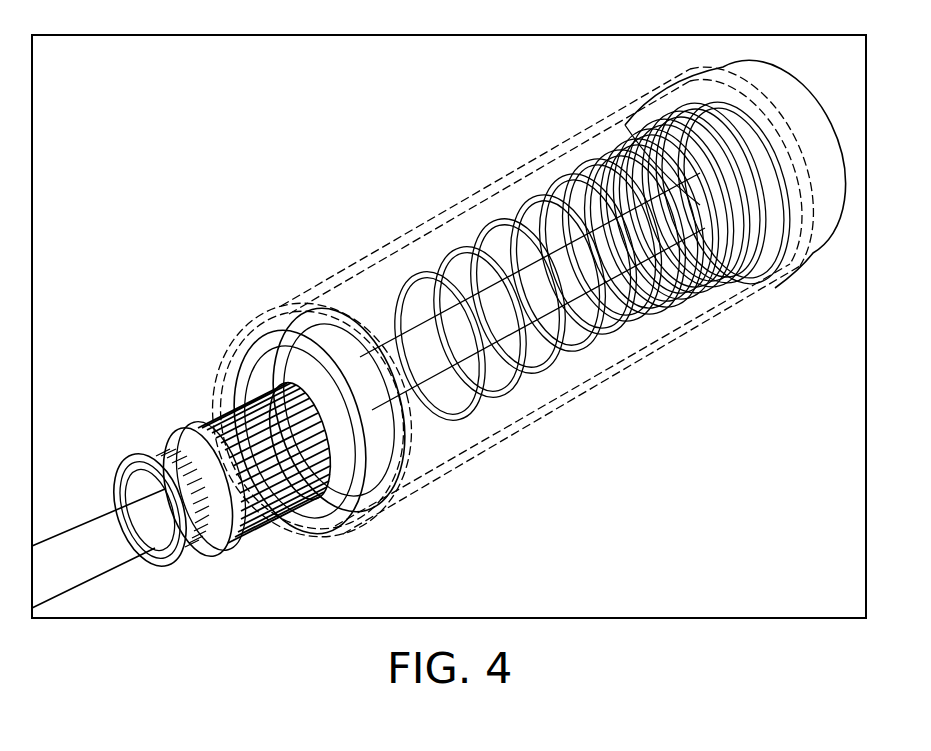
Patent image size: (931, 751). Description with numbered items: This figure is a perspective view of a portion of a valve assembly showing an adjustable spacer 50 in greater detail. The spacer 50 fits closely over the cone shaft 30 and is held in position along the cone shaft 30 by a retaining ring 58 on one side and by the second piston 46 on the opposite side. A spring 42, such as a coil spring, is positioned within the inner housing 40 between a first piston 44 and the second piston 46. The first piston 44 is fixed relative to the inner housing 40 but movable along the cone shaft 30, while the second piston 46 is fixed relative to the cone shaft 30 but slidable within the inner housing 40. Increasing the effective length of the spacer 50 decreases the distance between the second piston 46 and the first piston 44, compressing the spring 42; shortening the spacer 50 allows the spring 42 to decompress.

The cone shaft 30 is at (90, 522).
The inner housing 40 is at (617, 373).
The spring 42 is at (515, 380).
The first piston 44 is at (810, 237).
The second piston 46 is at (423, 440).
The adjustable spacer 50 is at (265, 540).
The retaining ring 58 is at (158, 545).